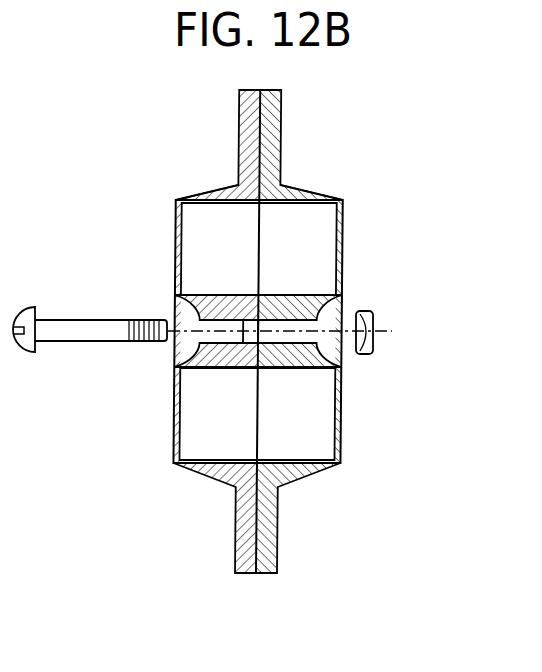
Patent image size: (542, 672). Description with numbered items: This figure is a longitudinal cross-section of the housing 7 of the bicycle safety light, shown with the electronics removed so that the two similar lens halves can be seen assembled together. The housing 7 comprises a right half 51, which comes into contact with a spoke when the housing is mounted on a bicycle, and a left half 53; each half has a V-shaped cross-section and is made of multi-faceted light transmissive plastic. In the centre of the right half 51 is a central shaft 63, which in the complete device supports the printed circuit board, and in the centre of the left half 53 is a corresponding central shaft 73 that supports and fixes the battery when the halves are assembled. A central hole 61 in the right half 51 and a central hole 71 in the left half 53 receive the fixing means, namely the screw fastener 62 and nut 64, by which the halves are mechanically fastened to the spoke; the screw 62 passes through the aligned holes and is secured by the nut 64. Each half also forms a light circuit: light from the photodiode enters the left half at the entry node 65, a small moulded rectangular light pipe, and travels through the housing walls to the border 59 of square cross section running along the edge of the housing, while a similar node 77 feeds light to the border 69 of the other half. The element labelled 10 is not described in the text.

The housing 7 is at (317, 497).
The nut 10 is at (371, 332).
The right half 51 is at (196, 420).
The left half 53 is at (310, 243).
The border 59 is at (244, 528).
The central hole 61 is at (201, 320).
The screw fastener 62 is at (86, 343).
The central shaft 63 is at (213, 370).
The nut 64 is at (252, 297).
The entry node 65 is at (233, 193).
The border 69 is at (275, 130).
The central hole 71 is at (316, 344).
The central shaft 73 is at (298, 298).
The node 77 is at (284, 196).